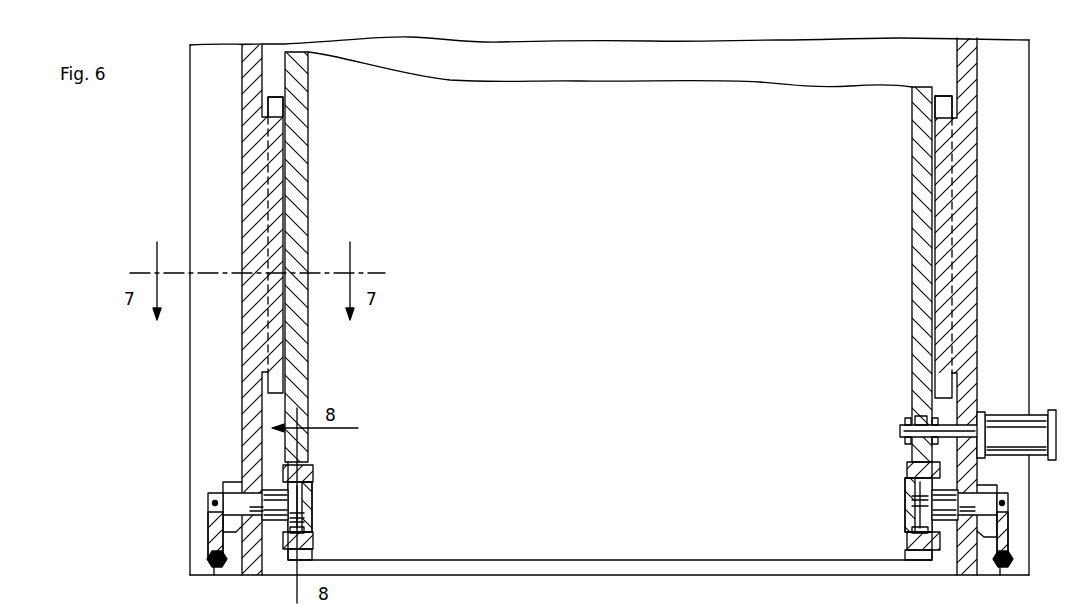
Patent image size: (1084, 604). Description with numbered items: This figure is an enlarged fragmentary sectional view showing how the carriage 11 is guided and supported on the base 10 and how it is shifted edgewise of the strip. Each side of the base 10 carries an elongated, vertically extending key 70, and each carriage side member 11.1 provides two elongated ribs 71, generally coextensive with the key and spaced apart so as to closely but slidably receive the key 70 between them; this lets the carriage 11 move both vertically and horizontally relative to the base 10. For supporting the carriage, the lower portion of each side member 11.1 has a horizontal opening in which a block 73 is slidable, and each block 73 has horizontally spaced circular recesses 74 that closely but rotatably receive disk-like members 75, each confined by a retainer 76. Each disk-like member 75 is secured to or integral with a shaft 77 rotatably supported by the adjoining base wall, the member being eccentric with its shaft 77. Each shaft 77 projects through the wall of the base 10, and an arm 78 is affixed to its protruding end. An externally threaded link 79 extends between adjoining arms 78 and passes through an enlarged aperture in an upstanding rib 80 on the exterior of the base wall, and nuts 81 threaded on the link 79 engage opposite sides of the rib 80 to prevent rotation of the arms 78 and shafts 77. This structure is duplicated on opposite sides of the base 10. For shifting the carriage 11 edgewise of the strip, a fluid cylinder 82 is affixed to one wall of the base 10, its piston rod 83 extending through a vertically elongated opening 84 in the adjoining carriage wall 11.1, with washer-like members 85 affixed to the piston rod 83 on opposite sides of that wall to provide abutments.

The base 10 is at (246, 133).
The carriage 11 is at (812, 84).
The carriage side member 11.1 is at (302, 92).
The key 70 is at (270, 149).
The rib 71 is at (275, 100).
The block 73 is at (312, 488).
The circular recess 74 is at (310, 536).
The disk-like member 75 is at (306, 519).
The retainer 76 is at (290, 478).
The shaft 77 is at (240, 500).
The arm 78 is at (210, 526).
The link 79 is at (216, 568).
The rib 80 is at (192, 166).
The nut 81 is at (208, 560).
The fluid cylinder 82 is at (1038, 418).
The piston rod 83 is at (902, 432).
The vertically elongated opening 84 is at (921, 417).
The washer-like member 85 is at (906, 420).